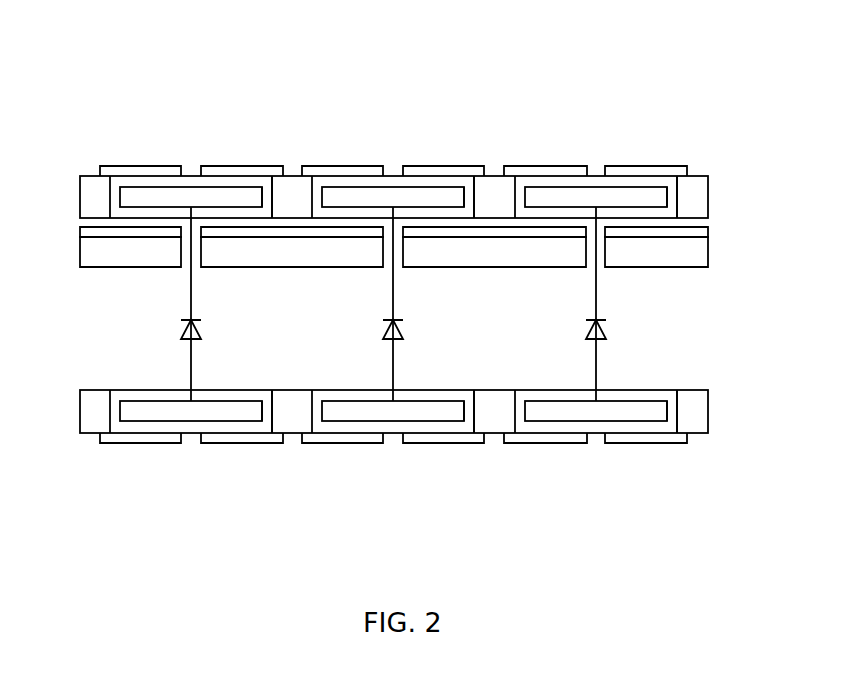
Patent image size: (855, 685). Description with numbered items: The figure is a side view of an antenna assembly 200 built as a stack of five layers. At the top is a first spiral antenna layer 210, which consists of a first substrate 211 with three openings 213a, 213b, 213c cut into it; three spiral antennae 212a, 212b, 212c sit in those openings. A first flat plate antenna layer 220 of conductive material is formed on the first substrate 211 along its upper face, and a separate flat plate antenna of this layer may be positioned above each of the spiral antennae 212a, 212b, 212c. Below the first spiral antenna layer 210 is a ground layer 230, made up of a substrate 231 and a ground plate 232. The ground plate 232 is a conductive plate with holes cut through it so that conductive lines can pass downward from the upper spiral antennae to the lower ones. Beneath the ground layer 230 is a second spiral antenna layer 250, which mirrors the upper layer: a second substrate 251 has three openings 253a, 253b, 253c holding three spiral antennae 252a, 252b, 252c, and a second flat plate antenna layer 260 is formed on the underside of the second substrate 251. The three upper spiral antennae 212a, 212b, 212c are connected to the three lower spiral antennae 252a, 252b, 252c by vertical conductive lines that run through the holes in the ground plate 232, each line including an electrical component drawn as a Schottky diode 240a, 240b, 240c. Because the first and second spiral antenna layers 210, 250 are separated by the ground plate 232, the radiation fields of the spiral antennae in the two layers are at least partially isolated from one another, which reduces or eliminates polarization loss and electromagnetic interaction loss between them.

The antenna assembly 200 is at (553, 63).
The first spiral antenna layer 210 is at (747, 193).
The first substrate 211 is at (80, 201).
The spiral antenna 212a is at (167, 187).
The spiral antenna 212b is at (369, 187).
The spiral antenna 212c is at (577, 187).
The opening 213a is at (268, 187).
The opening 213b is at (467, 186).
The opening 213c is at (668, 186).
The first flat plate antenna layer 220 is at (712, 173).
The ground layer 230 is at (747, 248).
The substrate 231 is at (80, 257).
The ground plate 232 is at (80, 232).
The Schottky diode 240a is at (200, 333).
The Schottky diode 240b is at (402, 333).
The Schottky diode 240c is at (605, 333).
The second spiral antenna layer 250 is at (747, 408).
The second substrate 251 is at (80, 418).
The spiral antenna 252a is at (163, 421).
The spiral antenna 252b is at (362, 421).
The spiral antenna 252c is at (570, 421).
The opening 253a is at (268, 404).
The opening 253b is at (473, 407).
The opening 253c is at (677, 407).
The second flat plate antenna layer 260 is at (707, 437).